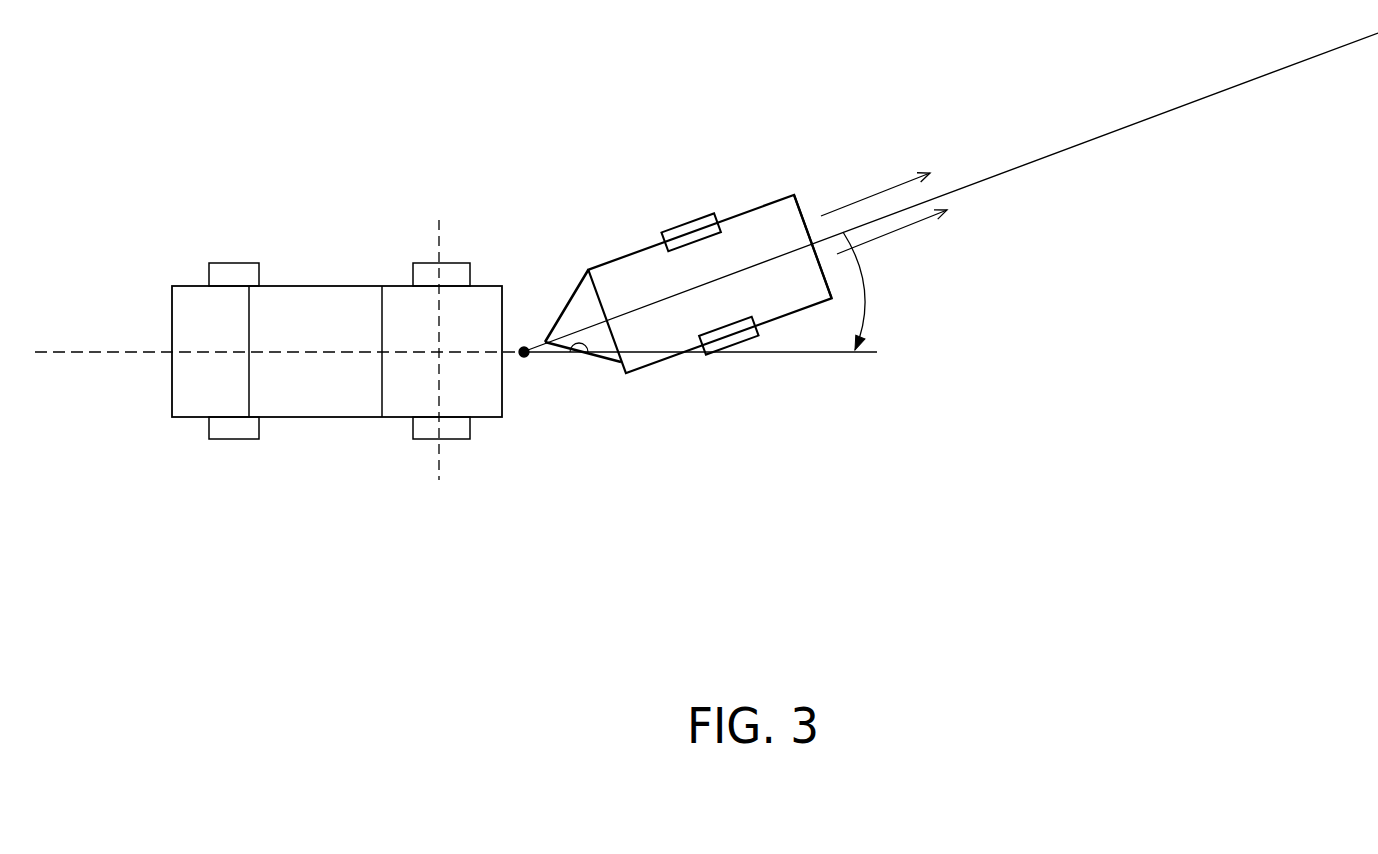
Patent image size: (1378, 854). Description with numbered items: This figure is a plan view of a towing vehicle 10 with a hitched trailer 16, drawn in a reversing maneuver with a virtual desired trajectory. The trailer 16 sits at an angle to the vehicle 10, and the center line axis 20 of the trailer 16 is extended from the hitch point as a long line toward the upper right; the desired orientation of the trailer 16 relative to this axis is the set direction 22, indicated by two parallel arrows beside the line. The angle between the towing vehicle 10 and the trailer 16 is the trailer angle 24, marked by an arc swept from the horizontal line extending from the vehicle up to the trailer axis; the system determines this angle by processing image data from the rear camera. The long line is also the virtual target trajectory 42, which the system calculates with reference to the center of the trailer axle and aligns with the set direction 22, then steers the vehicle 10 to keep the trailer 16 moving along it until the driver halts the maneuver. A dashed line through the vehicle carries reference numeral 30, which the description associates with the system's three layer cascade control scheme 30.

The vehicle 10 is at (197, 285).
The three layer cascade control scheme 30 is at (129, 353).
The trailer 16 is at (613, 260).
The center line axis 20 is at (826, 238).
The set direction 22 is at (912, 247).
The trailer angle 24 is at (865, 315).
The virtual target trajectory 42 is at (1213, 93).